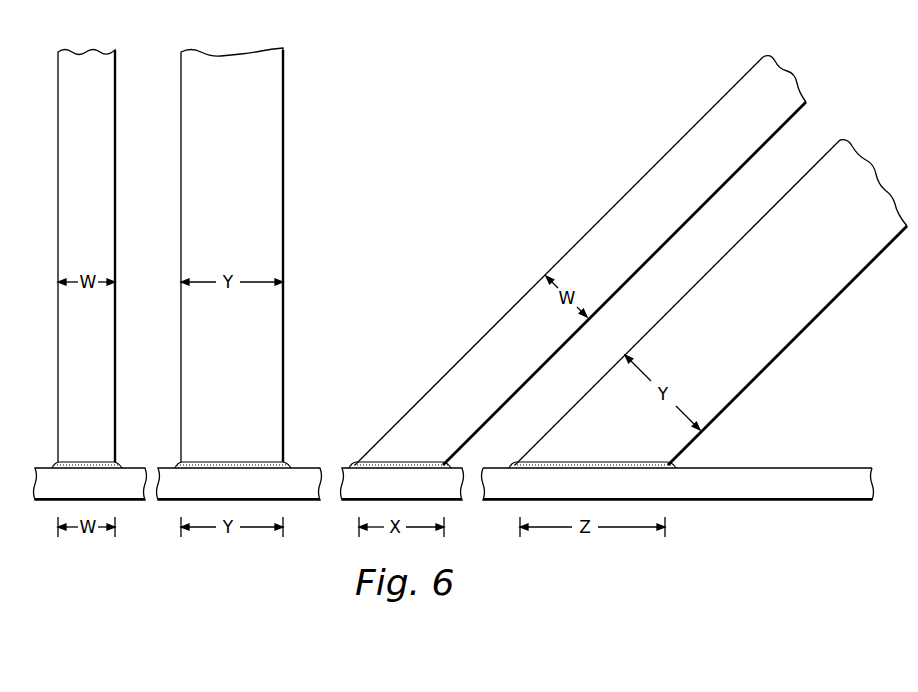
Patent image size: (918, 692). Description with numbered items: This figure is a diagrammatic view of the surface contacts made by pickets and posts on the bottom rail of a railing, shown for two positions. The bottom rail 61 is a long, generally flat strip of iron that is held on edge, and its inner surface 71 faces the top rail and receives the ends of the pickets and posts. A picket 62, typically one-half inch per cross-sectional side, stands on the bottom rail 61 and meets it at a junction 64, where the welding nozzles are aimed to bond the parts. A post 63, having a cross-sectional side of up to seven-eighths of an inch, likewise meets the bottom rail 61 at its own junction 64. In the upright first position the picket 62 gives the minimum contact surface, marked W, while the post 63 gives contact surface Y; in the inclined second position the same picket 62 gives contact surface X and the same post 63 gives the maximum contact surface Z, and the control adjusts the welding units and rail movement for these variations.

The bottom rail 61 is at (79, 493).
The picket 62 is at (73, 166).
The post 63 is at (210, 166).
The junction of picket or post with bottom rail 64 is at (85, 462).
The inner surface of bottom rail 71 is at (798, 468).